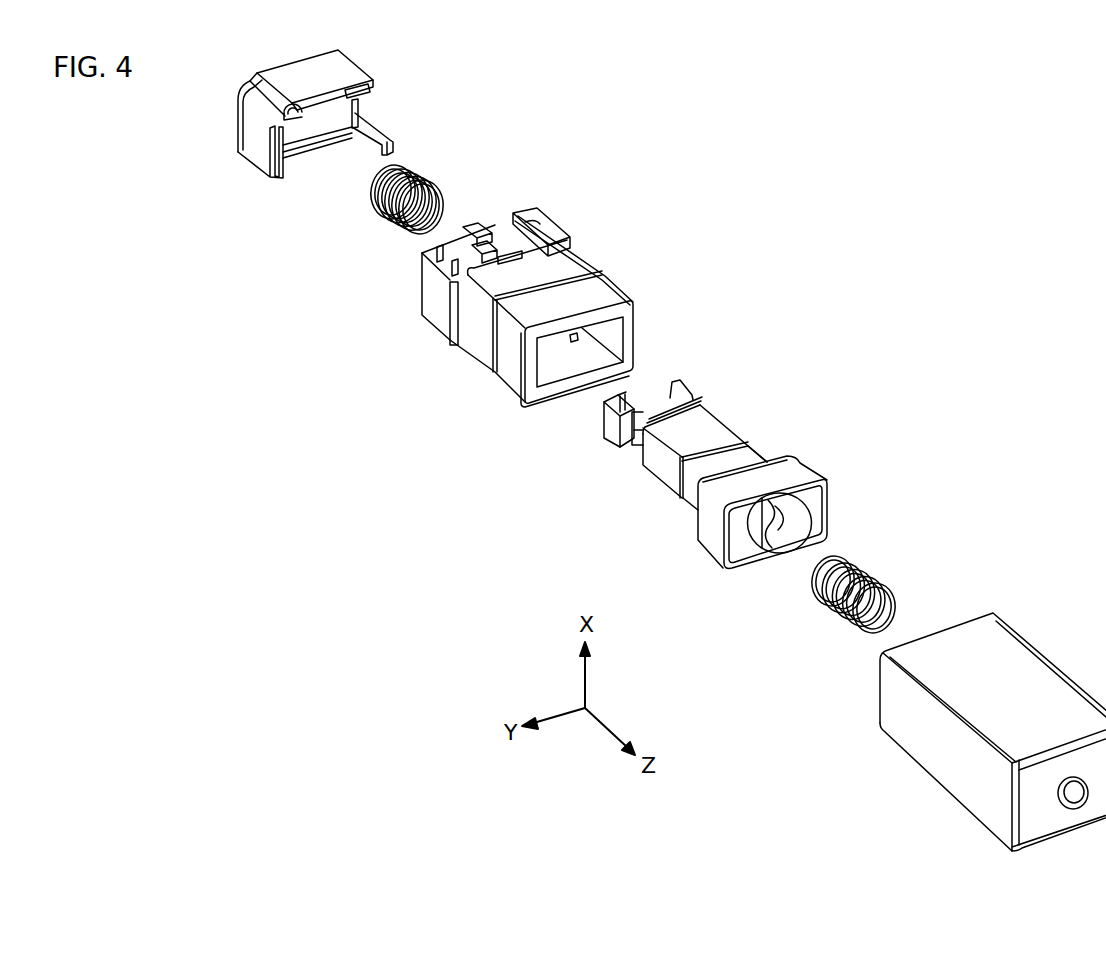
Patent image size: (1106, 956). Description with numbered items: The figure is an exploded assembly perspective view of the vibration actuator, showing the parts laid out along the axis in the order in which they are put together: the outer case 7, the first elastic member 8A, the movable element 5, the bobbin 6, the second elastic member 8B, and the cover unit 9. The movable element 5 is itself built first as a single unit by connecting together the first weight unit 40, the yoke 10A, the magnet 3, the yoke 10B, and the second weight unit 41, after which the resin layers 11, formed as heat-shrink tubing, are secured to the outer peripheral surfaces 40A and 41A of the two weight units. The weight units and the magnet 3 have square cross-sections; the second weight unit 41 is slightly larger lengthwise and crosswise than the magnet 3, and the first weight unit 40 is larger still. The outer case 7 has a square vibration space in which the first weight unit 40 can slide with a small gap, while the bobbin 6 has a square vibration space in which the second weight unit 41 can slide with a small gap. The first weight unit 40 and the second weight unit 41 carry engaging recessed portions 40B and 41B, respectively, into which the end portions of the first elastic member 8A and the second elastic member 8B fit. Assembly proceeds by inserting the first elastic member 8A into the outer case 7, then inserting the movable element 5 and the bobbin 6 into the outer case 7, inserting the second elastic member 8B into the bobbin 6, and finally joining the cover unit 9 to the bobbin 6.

The magnet 3 is at (658, 467).
The movable element 5 is at (800, 382).
The bobbin 6 is at (573, 270).
The outer case 7 is at (1038, 668).
The first elastic member 8A is at (860, 570).
The second elastic member 8B is at (420, 173).
The cover unit 9 is at (360, 73).
The yoke 10A is at (750, 431).
The yoke 10B is at (713, 407).
The resin layer 11 is at (622, 442).
The first weight unit 40 is at (690, 470).
The outer peripheral surface 40A is at (695, 527).
The engaging recessed portion 40B is at (787, 530).
The second weight unit 41 is at (605, 427).
The outer peripheral surface 41A is at (677, 390).
The engaging recessed portion 41B is at (628, 403).